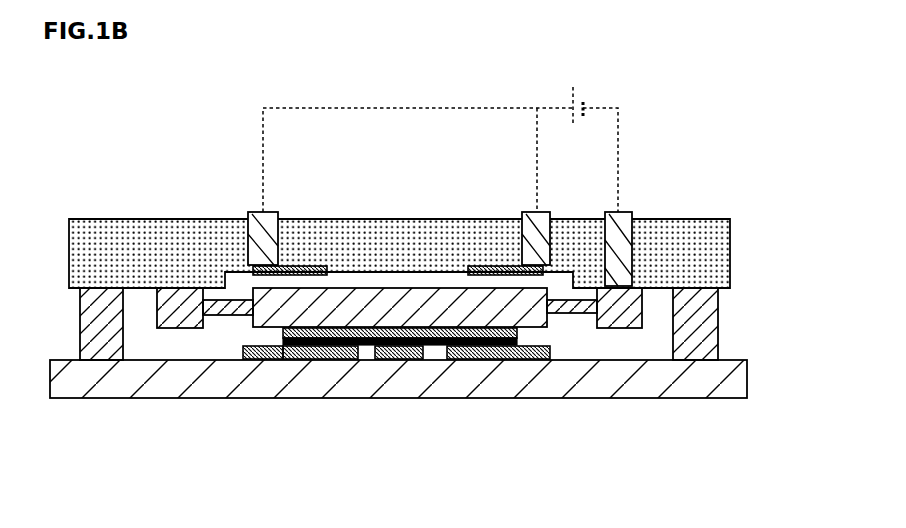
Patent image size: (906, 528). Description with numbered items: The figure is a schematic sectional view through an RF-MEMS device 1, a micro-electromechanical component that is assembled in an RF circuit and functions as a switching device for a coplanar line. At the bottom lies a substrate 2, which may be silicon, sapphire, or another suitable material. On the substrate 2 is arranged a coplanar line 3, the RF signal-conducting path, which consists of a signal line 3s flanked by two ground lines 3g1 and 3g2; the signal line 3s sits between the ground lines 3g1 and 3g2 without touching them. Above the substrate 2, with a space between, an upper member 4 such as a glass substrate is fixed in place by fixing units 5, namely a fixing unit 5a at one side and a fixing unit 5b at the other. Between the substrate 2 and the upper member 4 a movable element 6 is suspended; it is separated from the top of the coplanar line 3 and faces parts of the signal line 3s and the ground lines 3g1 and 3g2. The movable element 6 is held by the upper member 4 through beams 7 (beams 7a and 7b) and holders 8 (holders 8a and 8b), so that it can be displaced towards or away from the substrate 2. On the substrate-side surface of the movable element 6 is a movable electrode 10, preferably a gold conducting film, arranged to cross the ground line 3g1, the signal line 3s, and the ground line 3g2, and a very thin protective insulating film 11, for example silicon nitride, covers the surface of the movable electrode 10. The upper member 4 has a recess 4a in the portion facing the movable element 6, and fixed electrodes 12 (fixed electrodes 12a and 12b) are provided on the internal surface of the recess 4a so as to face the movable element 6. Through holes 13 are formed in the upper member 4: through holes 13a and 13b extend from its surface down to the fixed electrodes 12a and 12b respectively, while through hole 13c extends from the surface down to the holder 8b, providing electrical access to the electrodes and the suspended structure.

The RF-MEMS device 1 is at (700, 126).
The substrate 2 is at (747, 380).
The coplanar line 3 is at (386, 430).
The ground line 3g1 is at (305, 362).
The signal line 3s is at (398, 362).
The ground line 3g2 is at (498, 406).
The upper member 4 is at (115, 228).
The recess 4a is at (348, 272).
The fixing units 5 is at (404, 324).
The fixing unit 5a is at (97, 318).
The fixing unit 5b is at (718, 318).
The movable element 6 is at (390, 288).
The beams 7 is at (376, 389).
The beam 7a is at (208, 316).
The beam 7b is at (567, 313).
The holders 8 is at (366, 384).
The holder 8a is at (168, 330).
The holder 8b is at (622, 326).
The movable electrode 10 is at (283, 335).
The protective insulating film 11 is at (253, 362).
The fixed electrodes 12 is at (398, 200).
The fixed electrode 12a is at (316, 266).
The fixed electrode 12b is at (482, 266).
The through holes 13 is at (456, 202).
The through hole 13a is at (254, 213).
The through hole 13b is at (530, 212).
The through hole 13c is at (630, 213).